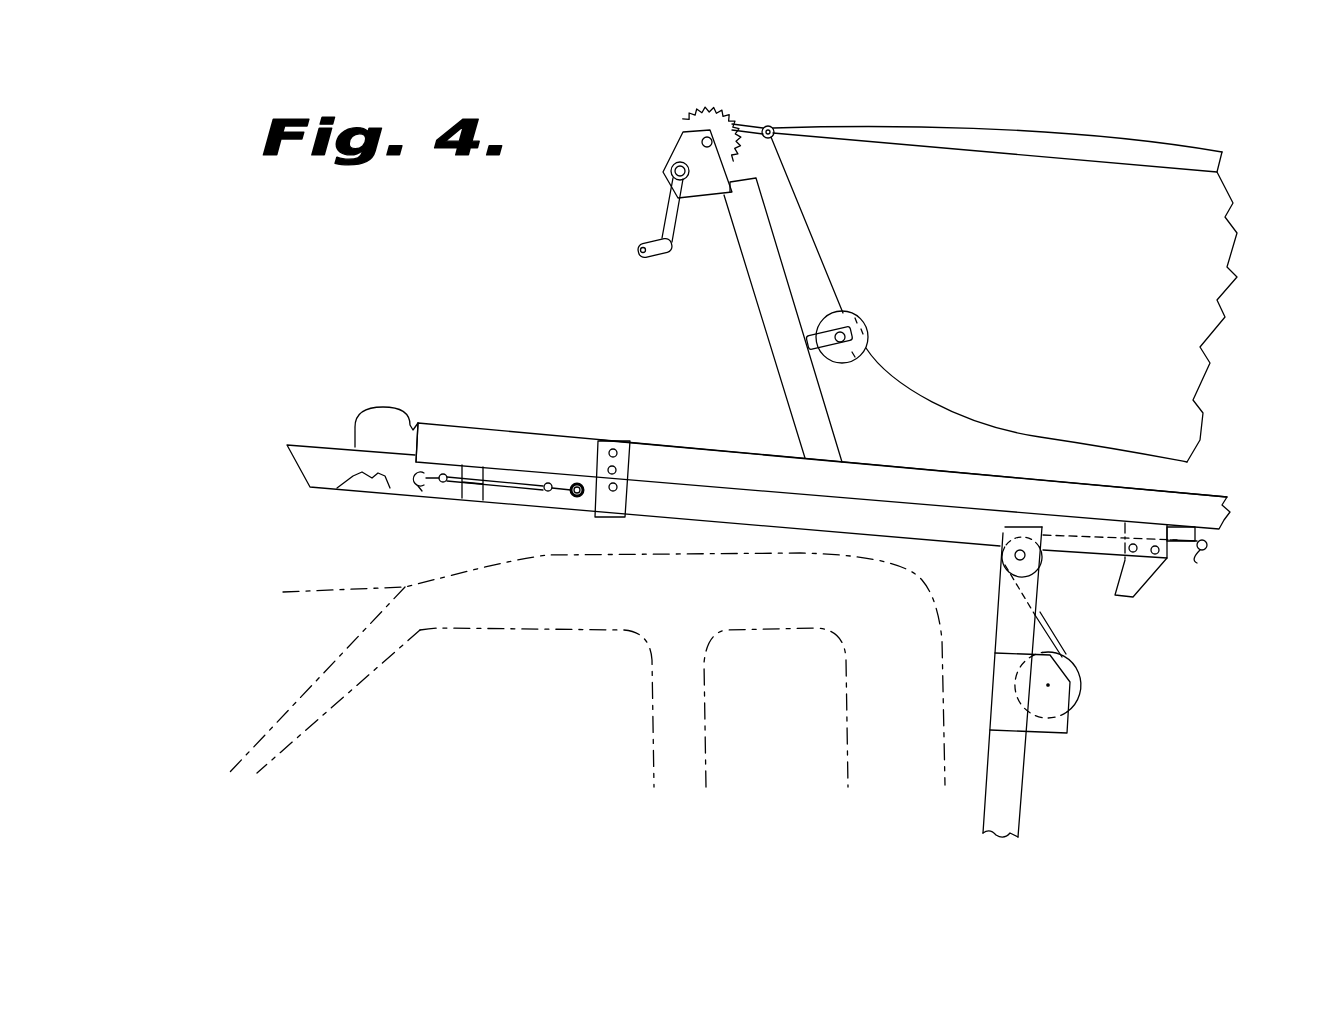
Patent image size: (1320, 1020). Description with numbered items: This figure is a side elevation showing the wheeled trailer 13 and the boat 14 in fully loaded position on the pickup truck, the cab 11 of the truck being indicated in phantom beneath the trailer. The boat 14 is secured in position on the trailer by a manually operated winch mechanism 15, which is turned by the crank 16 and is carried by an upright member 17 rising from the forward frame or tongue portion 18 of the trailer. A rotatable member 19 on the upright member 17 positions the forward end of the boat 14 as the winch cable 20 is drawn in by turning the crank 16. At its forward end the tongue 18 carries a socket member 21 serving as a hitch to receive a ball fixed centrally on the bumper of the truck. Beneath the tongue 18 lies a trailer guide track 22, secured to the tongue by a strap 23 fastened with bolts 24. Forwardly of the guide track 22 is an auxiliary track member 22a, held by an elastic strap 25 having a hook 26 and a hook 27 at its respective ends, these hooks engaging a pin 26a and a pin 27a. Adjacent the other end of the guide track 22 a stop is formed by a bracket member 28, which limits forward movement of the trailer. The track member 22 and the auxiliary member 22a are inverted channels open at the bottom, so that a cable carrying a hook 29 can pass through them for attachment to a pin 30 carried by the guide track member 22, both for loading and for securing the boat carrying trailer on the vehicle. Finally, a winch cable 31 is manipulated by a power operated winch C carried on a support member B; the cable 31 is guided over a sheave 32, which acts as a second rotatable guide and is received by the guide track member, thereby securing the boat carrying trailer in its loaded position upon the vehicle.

The cab 11 is at (587, 670).
The wheeled trailer 13 is at (723, 453).
The boat 14 is at (920, 137).
The winch mechanism 15 is at (731, 89).
The crank 16 is at (650, 262).
The upright member 17 is at (761, 288).
The tongue portion 18 is at (876, 481).
The rotatable member 19 is at (853, 322).
The winch cable 20 is at (772, 126).
The socket member 21 is at (375, 406).
The trailer guide track 22 is at (773, 480).
The auxiliary track member 22a is at (320, 478).
The strap 23 is at (618, 517).
The bolts 24 is at (617, 468).
The elastic strap 25 is at (507, 500).
The hook 26 is at (418, 487).
The pin 26a is at (437, 473).
The hook 27 is at (577, 498).
The pin 27a is at (576, 484).
The bracket member 28 is at (1138, 583).
The hook 29 is at (1215, 551).
The pin 30 is at (1198, 556).
The winch cable 31 is at (1050, 637).
The sheave 32 is at (1002, 560).
The support member B is at (1017, 753).
The power operated winch C is at (1083, 693).